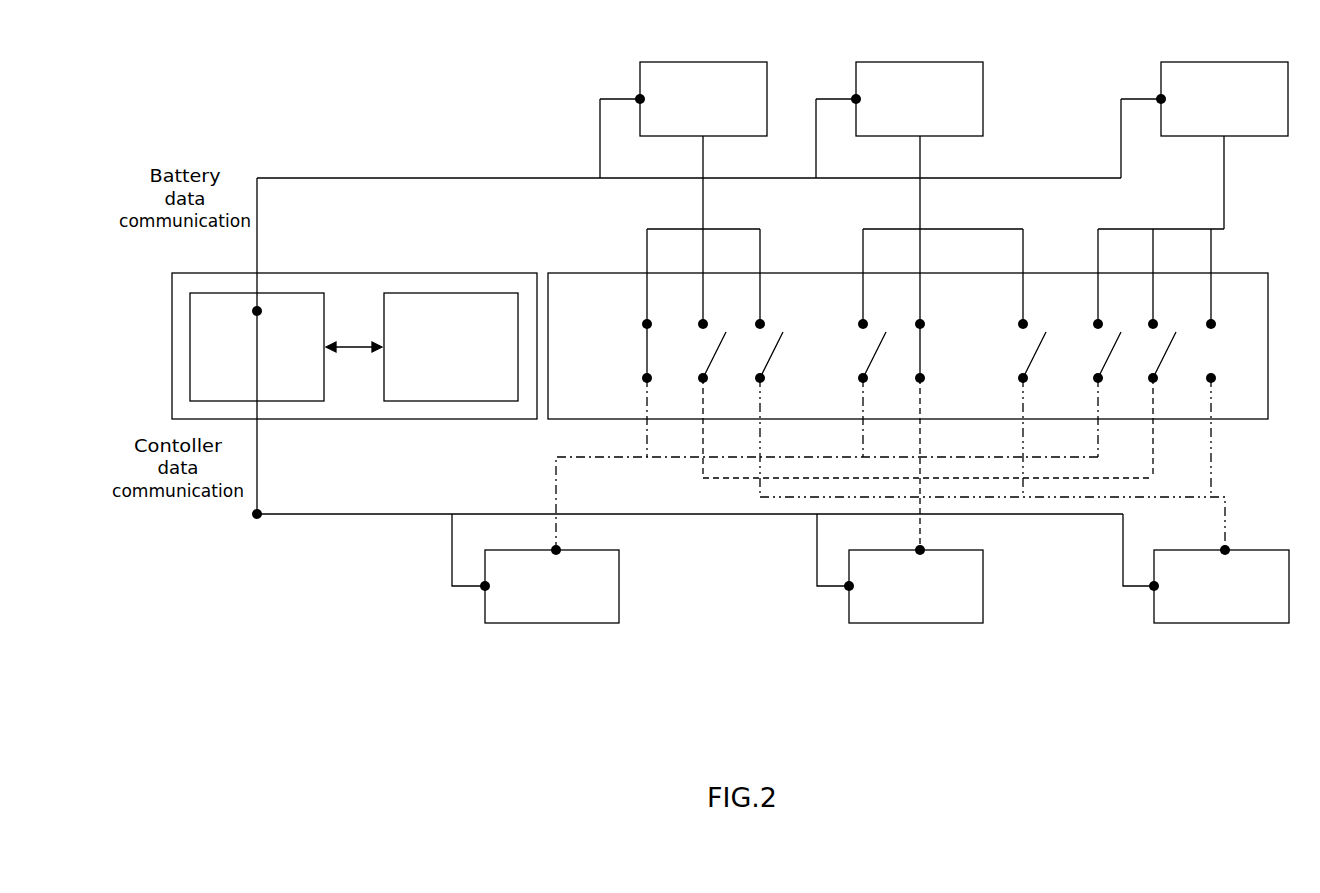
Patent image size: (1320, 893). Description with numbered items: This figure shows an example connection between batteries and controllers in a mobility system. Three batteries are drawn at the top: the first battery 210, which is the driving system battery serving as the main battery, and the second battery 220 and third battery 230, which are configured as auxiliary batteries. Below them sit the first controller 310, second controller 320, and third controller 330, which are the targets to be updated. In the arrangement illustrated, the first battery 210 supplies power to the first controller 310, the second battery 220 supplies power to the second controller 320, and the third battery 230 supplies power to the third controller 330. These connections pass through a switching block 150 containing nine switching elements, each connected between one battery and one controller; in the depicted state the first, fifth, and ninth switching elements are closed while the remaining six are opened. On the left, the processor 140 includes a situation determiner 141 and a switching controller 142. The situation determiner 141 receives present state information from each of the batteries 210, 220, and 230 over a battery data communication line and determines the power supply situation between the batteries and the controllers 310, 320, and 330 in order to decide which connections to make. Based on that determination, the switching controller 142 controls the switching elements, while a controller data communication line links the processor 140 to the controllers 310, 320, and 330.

The processor 140 is at (356, 273).
The situation determiner 141 is at (280, 293).
The switching controller 142 is at (451, 293).
The switch unit 150 is at (572, 273).
The first battery 210 is at (703, 62).
The second battery 220 is at (919, 62).
The third battery 230 is at (1224, 62).
The first controller 310 is at (555, 623).
The second controller 320 is at (919, 623).
The third controller 330 is at (1224, 623).